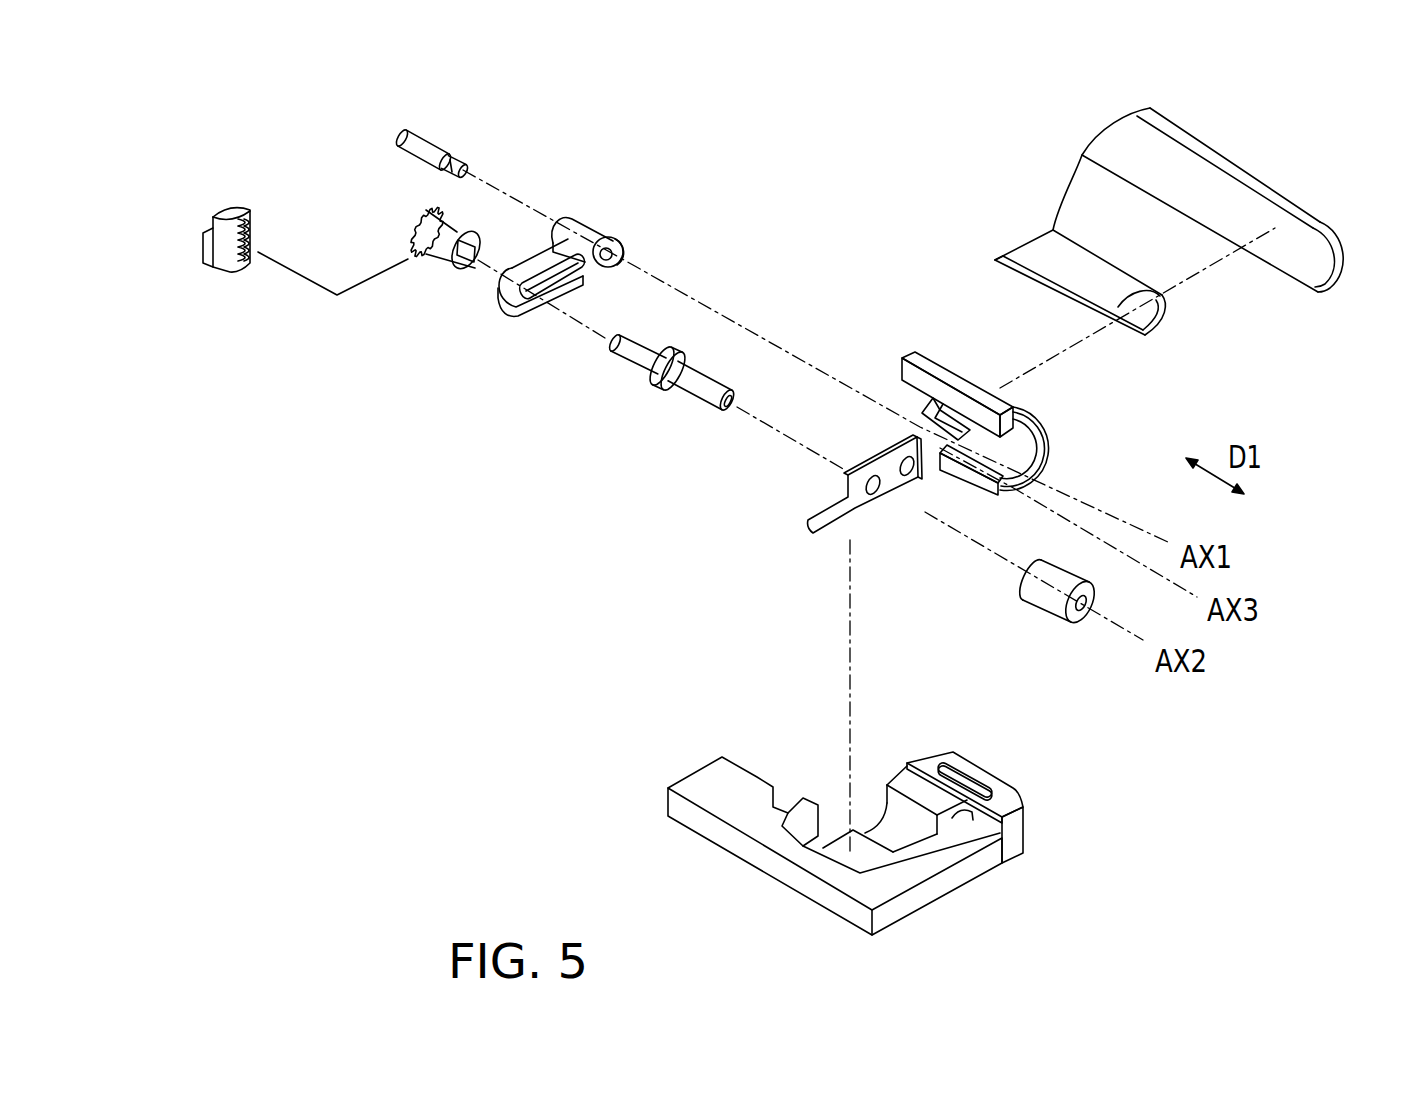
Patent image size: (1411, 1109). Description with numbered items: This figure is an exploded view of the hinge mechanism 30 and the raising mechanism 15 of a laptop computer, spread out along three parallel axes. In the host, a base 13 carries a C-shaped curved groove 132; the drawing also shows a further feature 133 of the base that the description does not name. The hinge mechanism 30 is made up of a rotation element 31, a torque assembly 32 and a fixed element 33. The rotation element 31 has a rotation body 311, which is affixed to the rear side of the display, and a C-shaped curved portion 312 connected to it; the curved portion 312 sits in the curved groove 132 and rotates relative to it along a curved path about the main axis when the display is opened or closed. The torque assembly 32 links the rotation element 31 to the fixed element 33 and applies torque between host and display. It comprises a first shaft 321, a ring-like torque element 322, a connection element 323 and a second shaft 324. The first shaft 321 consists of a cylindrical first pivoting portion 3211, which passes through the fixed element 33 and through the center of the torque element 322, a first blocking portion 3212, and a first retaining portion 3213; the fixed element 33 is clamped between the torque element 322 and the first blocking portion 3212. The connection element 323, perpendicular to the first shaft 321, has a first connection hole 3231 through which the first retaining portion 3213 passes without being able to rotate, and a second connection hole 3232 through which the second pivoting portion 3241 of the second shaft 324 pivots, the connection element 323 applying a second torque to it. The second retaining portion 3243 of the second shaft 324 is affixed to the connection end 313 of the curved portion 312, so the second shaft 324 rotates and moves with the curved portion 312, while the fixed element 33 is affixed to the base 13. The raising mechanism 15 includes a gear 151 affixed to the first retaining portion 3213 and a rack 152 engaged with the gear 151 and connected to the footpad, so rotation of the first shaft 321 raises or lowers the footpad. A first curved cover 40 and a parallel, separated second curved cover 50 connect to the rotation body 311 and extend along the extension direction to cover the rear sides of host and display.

The base 13 is at (1022, 832).
The curved groove 132 is at (988, 790).
The slot plate 133 is at (915, 760).
The raising mechanism 15 is at (140, 125).
The gear 151 is at (432, 225).
The rack 152 is at (232, 217).
The hinge mechanism 30 is at (300, 577).
The rotation element 31 is at (1058, 430).
The rotation body 311 is at (938, 355).
The curved portion 312 is at (1042, 394).
The connection end 313 is at (978, 480).
The torque assembly 32 is at (376, 104).
The first shaft 321 is at (532, 385).
The first pivoting portion 3211 is at (706, 414).
The first blocking portion 3212 is at (697, 402).
The first retaining portion 3213 is at (648, 378).
The torque element 322 is at (1036, 618).
The connection element 323 is at (498, 318).
The first connection hole 3231 is at (536, 303).
The second connection hole 3232 is at (614, 238).
The second shaft 324 is at (566, 90).
The second pivoting portion 3241 is at (416, 137).
The second retaining portion 3243 is at (464, 168).
The fixed element 33 is at (814, 560).
The first curved cover 40 is at (1348, 252).
The second curved cover 50 is at (1165, 312).